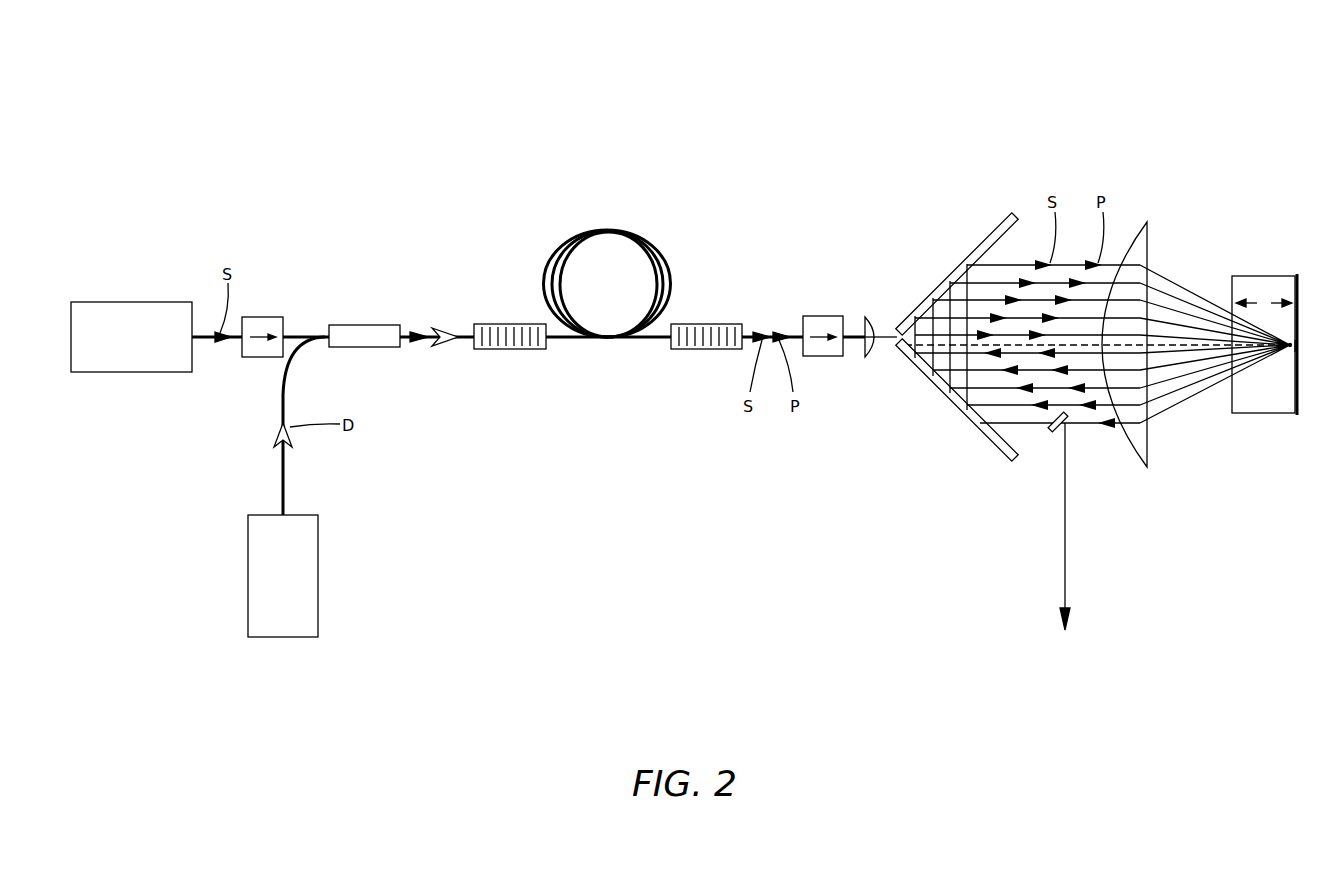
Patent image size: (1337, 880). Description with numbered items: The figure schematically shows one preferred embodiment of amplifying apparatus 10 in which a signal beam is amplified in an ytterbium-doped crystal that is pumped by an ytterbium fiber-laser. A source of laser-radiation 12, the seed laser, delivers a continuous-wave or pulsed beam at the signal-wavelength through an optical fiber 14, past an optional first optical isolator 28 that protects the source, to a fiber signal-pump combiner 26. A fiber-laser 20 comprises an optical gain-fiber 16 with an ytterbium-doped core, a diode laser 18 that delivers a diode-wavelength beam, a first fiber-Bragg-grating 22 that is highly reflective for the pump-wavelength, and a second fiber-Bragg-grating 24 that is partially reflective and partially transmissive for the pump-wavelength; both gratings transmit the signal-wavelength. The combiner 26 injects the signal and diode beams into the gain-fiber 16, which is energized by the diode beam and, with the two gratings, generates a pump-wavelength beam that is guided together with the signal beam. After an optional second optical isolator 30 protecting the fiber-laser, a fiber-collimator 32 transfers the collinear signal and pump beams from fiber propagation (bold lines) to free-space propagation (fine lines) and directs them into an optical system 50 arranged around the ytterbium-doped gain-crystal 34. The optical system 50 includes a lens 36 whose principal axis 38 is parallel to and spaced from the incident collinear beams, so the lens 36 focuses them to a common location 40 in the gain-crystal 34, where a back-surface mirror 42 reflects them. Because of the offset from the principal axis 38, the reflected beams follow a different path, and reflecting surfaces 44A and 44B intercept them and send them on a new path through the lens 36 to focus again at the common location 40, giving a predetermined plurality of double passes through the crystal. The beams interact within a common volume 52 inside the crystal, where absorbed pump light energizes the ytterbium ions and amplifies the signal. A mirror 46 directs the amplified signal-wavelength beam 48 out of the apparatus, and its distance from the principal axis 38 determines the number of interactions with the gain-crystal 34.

The amplifying apparatus 10 is at (963, 690).
The source of laser-radiation 12 is at (167, 300).
The optical fiber 14 is at (202, 340).
The optical gain-fiber 16 is at (607, 230).
The diode laser 18 is at (318, 613).
The fiber-laser 20 is at (490, 103).
The first fiber-Bragg-grating 22 is at (530, 323).
The second fiber-Bragg-grating 24 is at (686, 323).
The fiber signal-pump combiner 26 is at (390, 323).
The first optical isolator 28 is at (273, 317).
The second optical isolator 30 is at (815, 316).
The fiber-collimator 32 is at (867, 317).
The ytterbium-doped gain-crystal 34 is at (1248, 270).
The lens 36 is at (1145, 220).
The principal axis 38 is at (1200, 343).
The common location 40 is at (1289, 352).
The back-surface mirror 42 is at (1297, 275).
The reflecting surface 44A is at (983, 245).
The reflecting surface 44B is at (980, 427).
The mirror 46 is at (1053, 435).
The amplified signal-wavelength beam 48 is at (1065, 548).
The optical system 50 is at (947, 103).
The common volume 52 is at (1280, 362).